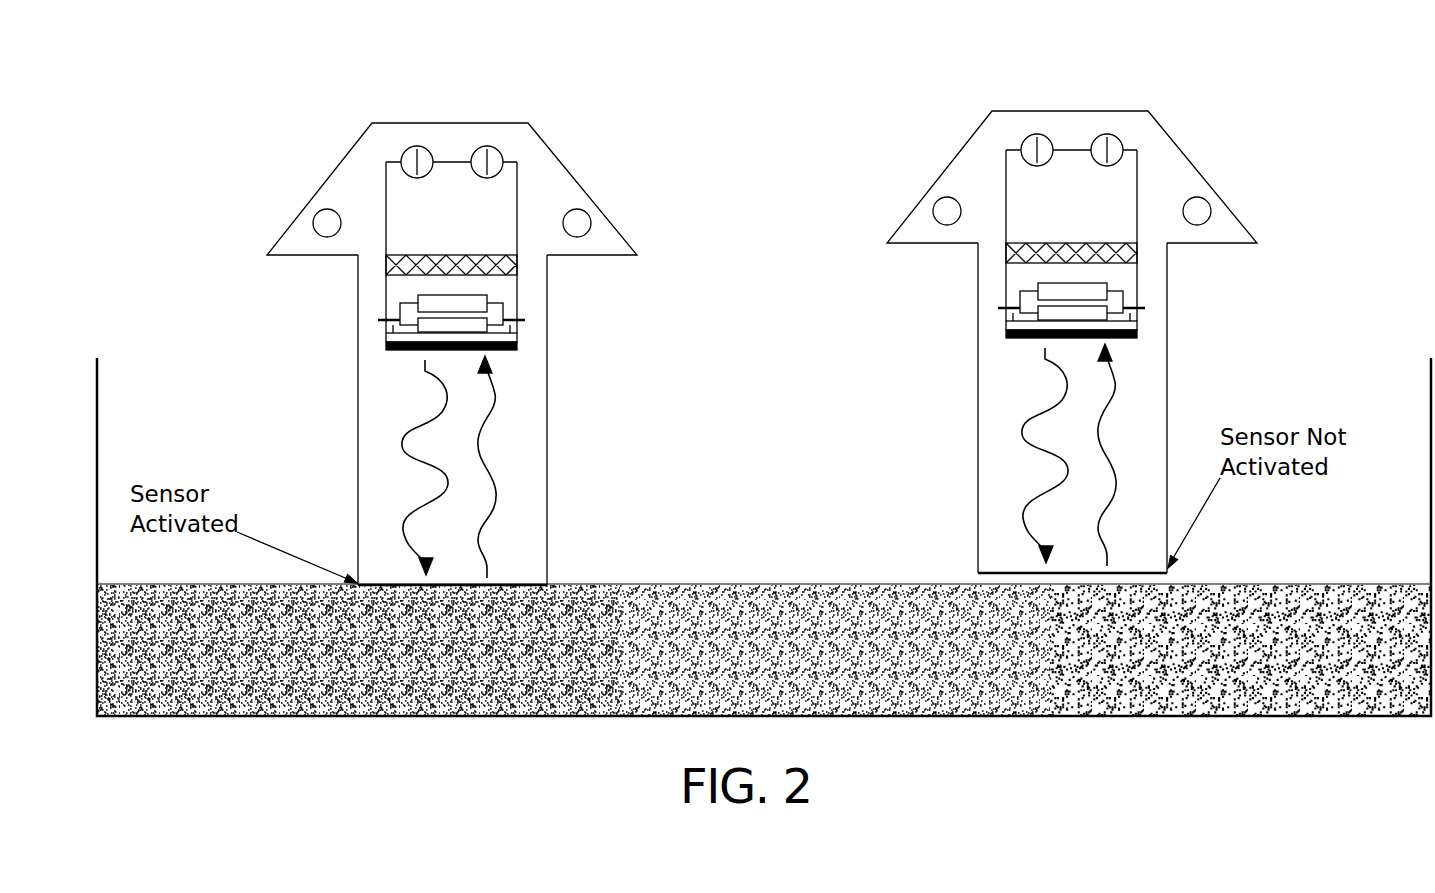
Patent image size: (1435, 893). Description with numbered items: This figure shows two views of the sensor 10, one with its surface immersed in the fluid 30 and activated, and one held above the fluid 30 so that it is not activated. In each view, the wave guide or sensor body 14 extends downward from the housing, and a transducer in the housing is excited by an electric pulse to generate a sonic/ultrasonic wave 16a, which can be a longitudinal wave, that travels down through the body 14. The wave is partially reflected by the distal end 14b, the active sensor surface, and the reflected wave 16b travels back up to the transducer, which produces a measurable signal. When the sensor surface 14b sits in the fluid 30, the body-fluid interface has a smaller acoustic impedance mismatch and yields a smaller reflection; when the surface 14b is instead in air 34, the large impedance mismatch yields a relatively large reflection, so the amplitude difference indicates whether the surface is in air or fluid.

The sensor 10 is at (604, 134).
The body 14 is at (522, 472).
The distal end 14b is at (501, 594).
The sonic/ultrasonic wave 16a is at (400, 436).
The reflected wave 16b is at (493, 407).
The fluid 30 is at (1287, 637).
The air 34 is at (975, 578).